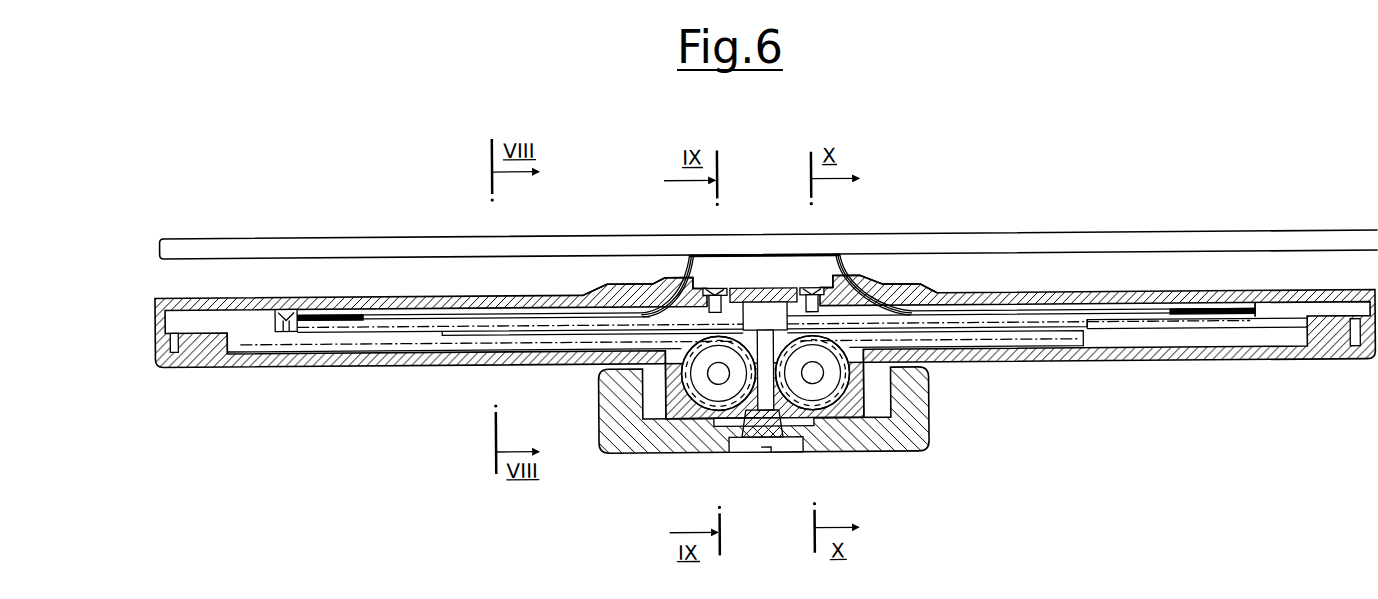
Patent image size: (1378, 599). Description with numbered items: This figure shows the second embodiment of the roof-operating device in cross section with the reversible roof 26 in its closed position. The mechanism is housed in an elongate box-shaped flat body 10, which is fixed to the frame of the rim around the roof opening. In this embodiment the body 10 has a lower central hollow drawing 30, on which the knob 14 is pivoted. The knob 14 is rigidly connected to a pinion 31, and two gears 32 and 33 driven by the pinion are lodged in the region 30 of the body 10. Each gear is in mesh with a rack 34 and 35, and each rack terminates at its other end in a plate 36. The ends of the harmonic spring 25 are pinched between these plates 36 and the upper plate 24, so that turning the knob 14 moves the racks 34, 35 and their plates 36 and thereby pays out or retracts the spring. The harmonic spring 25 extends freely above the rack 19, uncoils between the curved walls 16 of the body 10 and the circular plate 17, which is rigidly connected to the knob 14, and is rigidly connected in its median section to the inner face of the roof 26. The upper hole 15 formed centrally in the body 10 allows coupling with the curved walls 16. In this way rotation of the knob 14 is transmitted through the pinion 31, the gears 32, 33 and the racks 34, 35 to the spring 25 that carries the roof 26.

The body 10 is at (349, 357).
The knob 14 is at (667, 437).
The upper hole 15 is at (690, 285).
The curved walls 16 is at (628, 275).
The circular plate 17 is at (848, 296).
The rack 19 is at (770, 298).
The upper plate 24 is at (325, 311).
The harmonic spring 25 is at (503, 310).
The reversible roof 26 is at (456, 236).
The lower central hollow drawing 30 is at (848, 410).
The pinion 31 is at (793, 417).
The gear 32 is at (838, 375).
The gear 33 is at (713, 373).
The rack 34 is at (563, 340).
The rack 35 is at (1020, 343).
The plate 36 is at (398, 322).